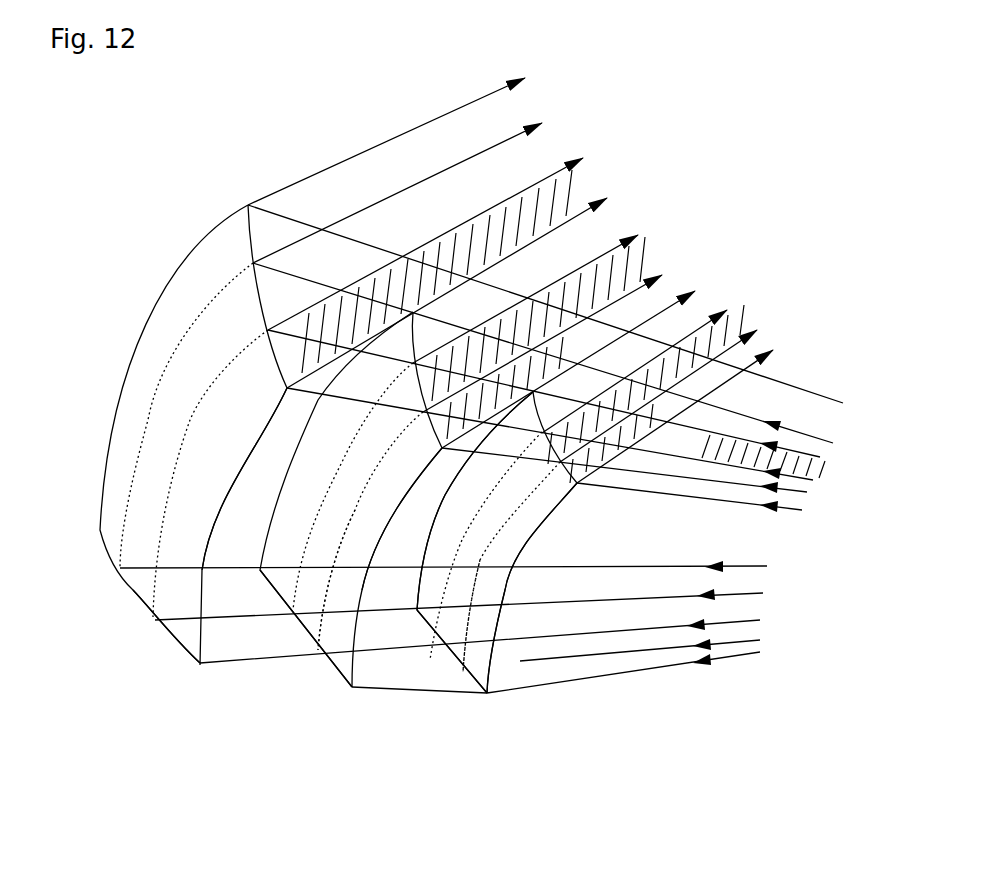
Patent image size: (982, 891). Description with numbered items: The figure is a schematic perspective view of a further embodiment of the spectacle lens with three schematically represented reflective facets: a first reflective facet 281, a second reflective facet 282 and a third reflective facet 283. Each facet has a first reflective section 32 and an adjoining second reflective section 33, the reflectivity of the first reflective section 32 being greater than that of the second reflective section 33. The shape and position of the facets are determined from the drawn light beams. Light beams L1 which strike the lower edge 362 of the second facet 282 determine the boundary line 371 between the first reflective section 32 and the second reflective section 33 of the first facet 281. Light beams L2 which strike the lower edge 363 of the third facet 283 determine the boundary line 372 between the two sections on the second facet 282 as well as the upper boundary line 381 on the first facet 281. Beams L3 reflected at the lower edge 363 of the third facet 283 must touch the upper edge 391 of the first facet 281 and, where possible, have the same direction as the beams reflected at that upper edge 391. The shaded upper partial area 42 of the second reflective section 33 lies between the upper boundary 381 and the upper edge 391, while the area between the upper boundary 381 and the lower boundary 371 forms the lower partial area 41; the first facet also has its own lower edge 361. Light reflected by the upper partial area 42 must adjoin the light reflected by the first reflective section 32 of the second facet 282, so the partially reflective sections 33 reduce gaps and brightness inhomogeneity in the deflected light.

The third reflective facet 283 is at (180, 670).
The second reflective facet 282 is at (333, 690).
The first reflective facet 281 is at (480, 705).
The lower edge of the third facet 363 is at (203, 592).
The lower edge of the second facet 362 is at (352, 664).
The lower edge of the first facet 361 is at (517, 543).
The boundary line on the second facet 372 is at (353, 507).
The boundary line on the first facet 371 is at (503, 518).
The upper boundary line on the first facet 381 is at (490, 487).
The upper edge of the first facet 391 is at (417, 592).
The upper partial area 42 is at (432, 600).
The lower partial area 41 is at (512, 560).
The second reflective section 33 is at (143, 605).
The first reflective section 32 is at (175, 623).
The light beams L1 is at (637, 657).
The light beams L2 is at (578, 637).
The light beams L3 is at (527, 607).